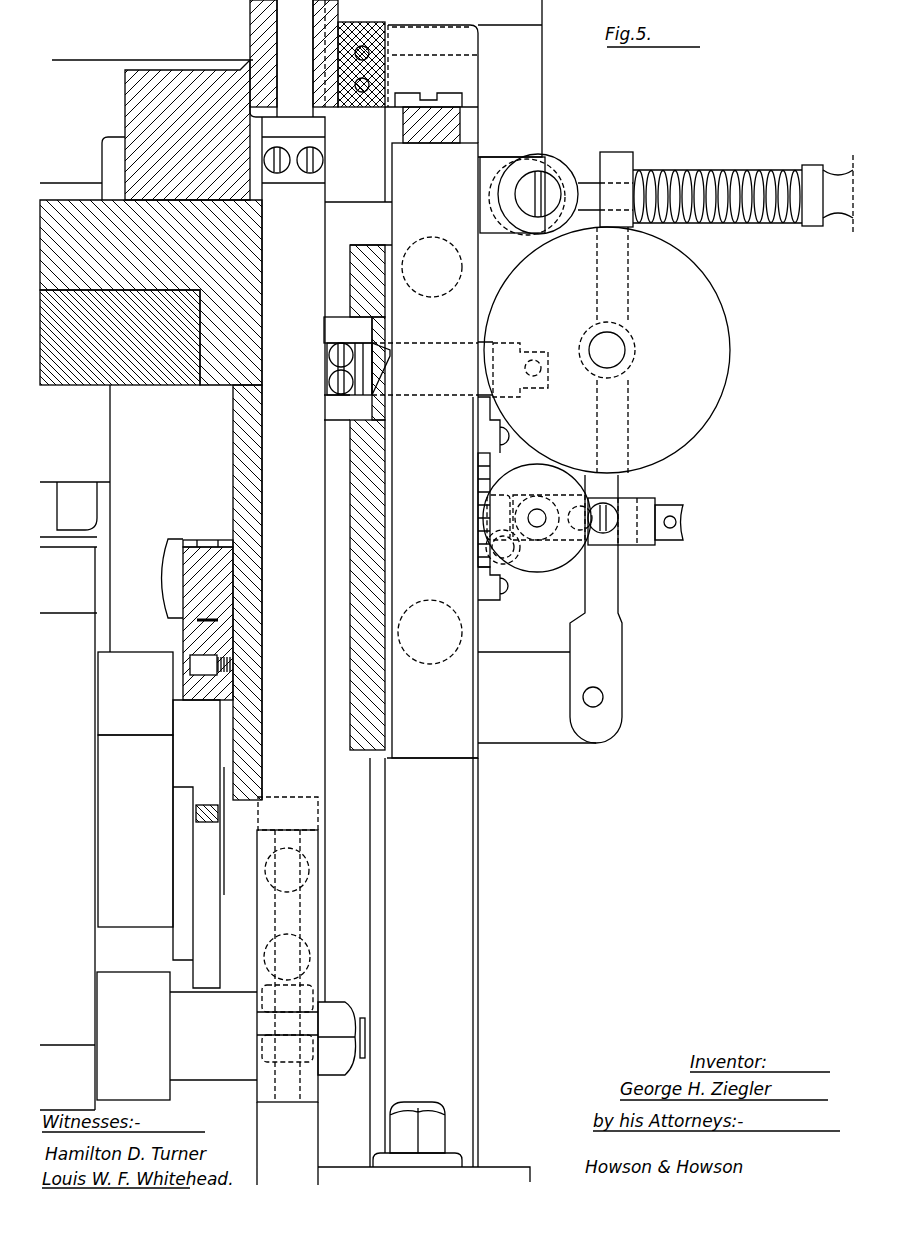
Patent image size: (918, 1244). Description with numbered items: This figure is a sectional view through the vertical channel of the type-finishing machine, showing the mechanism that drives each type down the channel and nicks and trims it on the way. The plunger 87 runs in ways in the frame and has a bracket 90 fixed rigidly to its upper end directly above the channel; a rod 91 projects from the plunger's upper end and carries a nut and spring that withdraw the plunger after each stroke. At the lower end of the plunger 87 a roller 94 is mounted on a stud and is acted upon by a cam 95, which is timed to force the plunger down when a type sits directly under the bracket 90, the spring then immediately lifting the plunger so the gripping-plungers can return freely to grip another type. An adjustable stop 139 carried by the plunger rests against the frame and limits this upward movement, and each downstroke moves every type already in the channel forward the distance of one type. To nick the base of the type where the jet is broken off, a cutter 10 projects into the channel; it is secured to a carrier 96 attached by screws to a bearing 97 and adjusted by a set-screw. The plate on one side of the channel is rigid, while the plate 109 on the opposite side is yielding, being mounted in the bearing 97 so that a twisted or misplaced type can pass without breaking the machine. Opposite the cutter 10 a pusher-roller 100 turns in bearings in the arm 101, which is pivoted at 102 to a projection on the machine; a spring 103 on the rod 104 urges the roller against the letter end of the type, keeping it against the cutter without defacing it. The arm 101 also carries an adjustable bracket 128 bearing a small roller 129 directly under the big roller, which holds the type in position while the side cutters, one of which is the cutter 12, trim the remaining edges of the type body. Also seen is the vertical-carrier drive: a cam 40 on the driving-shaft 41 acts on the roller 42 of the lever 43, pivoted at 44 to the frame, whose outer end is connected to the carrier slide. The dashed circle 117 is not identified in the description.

The rod 91 is at (295, 58).
The bracket 90 is at (431, 84).
The plunger 87 is at (293, 559).
The plate 109 is at (425, 450).
The pin 117 is at (430, 632).
The carrier 96 is at (348, 356).
The cutter 10 is at (380, 372).
The rod 104 is at (580, 185).
The arm 101 is at (608, 590).
The pivot 102 is at (604, 697).
The spring 103 is at (710, 176).
The pusher-roller 100 is at (607, 350).
The small roller 129 is at (537, 518).
The adjustable bracket 128 is at (645, 506).
The cutter 12 is at (480, 548).
The lever 43 is at (203, 560).
The pivot 44 is at (158, 580).
The roller 42 is at (188, 640).
The cam 40 is at (196, 844).
The driving-shaft 41 is at (225, 858).
The cam 95 is at (135, 789).
The roller 94 is at (133, 1036).
The adjustable stop 139 is at (318, 846).
The bearing 97 is at (478, 753).